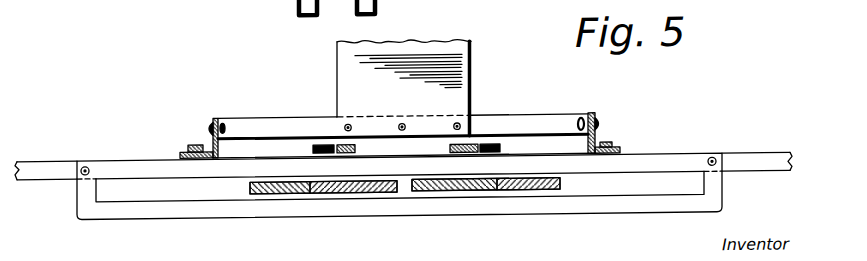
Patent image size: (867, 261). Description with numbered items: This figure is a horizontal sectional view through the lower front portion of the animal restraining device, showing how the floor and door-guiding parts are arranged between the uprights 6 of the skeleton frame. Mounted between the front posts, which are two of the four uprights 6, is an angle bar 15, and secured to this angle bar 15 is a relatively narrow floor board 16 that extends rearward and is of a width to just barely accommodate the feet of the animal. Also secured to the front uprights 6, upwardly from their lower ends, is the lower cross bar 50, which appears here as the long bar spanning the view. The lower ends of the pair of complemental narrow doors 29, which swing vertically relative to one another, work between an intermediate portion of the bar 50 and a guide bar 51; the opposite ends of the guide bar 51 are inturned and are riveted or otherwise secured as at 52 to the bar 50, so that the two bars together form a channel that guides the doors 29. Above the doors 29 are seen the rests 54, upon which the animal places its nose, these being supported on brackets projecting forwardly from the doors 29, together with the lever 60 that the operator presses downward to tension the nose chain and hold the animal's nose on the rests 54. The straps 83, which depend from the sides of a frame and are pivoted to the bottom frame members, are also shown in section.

The uprights 6 is at (210, 146).
The angle bar 15 is at (272, 130).
The floor board 16 is at (428, 60).
The doors 29 is at (310, 188).
The lower cross bar 50 is at (757, 180).
The guide bar 51 is at (240, 220).
The rivets 52 is at (88, 169).
The rests 54 is at (360, 18).
The lever 60 is at (245, 14).
The straps 83 is at (321, 149).